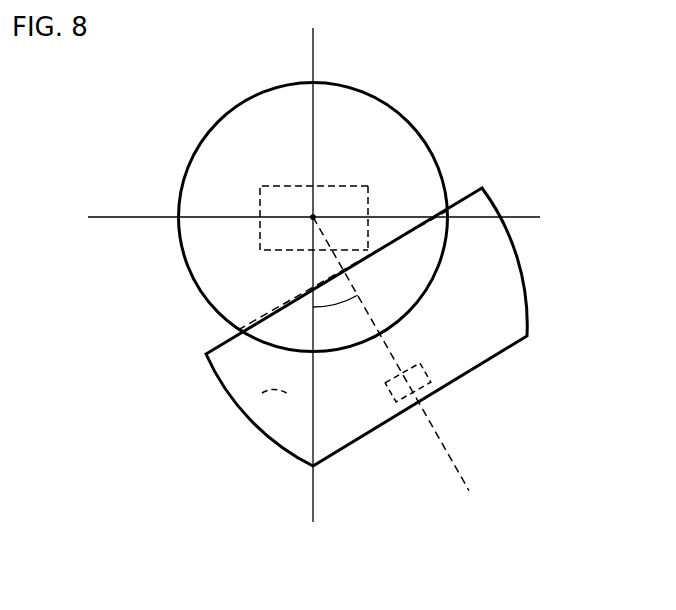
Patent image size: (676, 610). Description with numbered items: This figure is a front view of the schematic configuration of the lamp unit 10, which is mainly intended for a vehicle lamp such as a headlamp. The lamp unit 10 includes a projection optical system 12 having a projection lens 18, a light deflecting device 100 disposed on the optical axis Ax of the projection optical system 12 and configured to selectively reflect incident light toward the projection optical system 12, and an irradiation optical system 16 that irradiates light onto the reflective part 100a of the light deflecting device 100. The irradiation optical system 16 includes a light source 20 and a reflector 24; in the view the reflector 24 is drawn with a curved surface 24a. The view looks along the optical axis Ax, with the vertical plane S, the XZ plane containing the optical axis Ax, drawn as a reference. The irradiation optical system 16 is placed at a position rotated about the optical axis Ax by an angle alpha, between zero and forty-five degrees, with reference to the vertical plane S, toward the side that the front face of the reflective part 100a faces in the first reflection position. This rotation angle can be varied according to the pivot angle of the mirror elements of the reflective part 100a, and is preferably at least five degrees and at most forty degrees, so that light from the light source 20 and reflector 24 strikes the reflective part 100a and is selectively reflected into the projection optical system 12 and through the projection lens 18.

The lamp unit 10 is at (330, 571).
The projection optical system 12 is at (312, 178).
The projection lens 18 is at (397, 107).
The vertical plane S is at (313, 138).
The optical axis Ax is at (313, 217).
The light deflecting device 100 is at (399, 180).
The reflective part 100a is at (355, 207).
The irradiation optical system 16 is at (377, 327).
The reflector 24 is at (528, 310).
The curved surface of tool holder 24a is at (262, 393).
The light source 20 is at (461, 387).